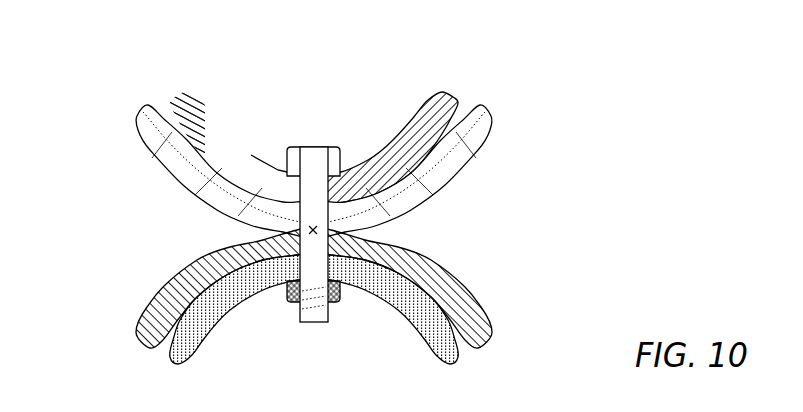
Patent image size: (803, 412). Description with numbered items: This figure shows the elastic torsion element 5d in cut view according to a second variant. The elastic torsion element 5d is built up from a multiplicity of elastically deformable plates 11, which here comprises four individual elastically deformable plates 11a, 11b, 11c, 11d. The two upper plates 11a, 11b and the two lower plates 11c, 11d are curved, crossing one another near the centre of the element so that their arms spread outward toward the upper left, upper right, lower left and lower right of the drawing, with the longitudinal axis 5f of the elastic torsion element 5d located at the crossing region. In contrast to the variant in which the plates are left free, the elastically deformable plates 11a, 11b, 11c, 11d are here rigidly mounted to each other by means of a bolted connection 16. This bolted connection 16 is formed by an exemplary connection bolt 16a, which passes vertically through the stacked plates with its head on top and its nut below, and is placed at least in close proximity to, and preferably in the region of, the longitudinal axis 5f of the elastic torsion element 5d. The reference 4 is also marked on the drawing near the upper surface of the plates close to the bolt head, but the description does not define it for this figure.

The spring clamp body 4 is at (268, 152).
The elastic torsion element 5d is at (394, 84).
The longitudinal axis 5f is at (329, 225).
The multiplicity of elastically deformable plates 11 is at (512, 106).
The elastically deformable plate 11a is at (172, 86).
The elastically deformable plate 11b is at (126, 107).
The elastically deformable plate 11c is at (135, 311).
The elastically deformable plate 11d is at (225, 333).
The bolted connection 16 is at (372, 137).
The connection bolt 16a is at (315, 314).